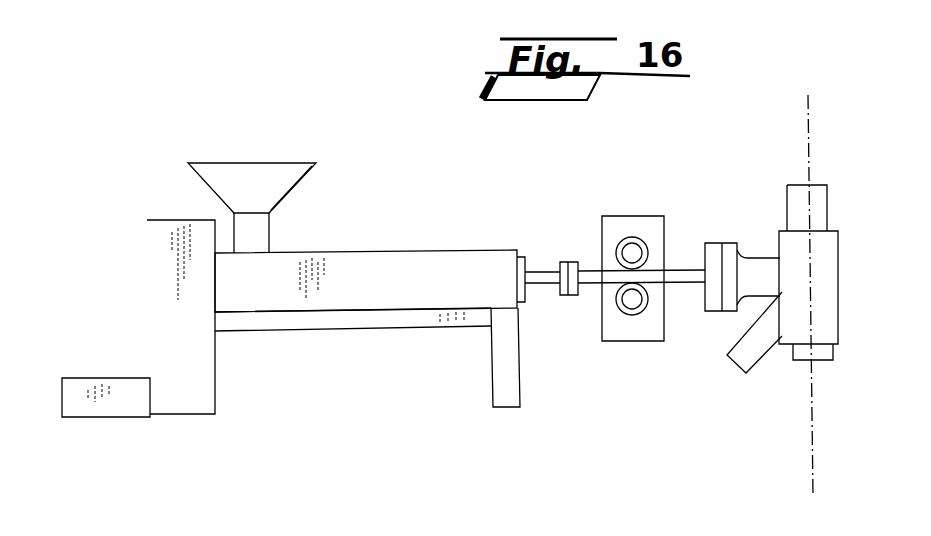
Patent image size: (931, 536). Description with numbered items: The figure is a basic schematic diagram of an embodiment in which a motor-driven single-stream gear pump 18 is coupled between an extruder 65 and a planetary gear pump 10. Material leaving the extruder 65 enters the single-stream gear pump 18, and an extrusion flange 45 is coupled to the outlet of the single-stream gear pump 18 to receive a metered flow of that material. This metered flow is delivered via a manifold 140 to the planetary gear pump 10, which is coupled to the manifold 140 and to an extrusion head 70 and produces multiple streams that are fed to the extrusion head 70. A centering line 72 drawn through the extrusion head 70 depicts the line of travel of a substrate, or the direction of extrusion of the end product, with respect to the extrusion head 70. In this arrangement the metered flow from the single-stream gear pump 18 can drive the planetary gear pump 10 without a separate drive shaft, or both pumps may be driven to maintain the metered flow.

The extruder 65 is at (390, 252).
The planetary gear pump 10 is at (743, 346).
The single-stream gear pump 18 is at (623, 342).
The extrusion flange 45 is at (739, 252).
The extrusion head 70 is at (797, 196).
The manifold 140 is at (797, 360).
The centering line 72 is at (812, 437).